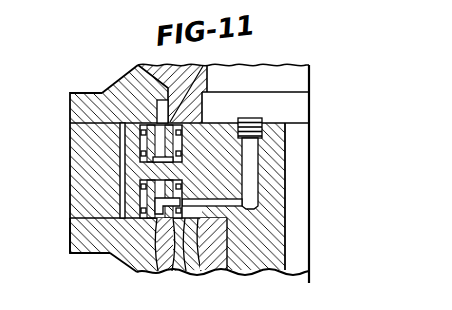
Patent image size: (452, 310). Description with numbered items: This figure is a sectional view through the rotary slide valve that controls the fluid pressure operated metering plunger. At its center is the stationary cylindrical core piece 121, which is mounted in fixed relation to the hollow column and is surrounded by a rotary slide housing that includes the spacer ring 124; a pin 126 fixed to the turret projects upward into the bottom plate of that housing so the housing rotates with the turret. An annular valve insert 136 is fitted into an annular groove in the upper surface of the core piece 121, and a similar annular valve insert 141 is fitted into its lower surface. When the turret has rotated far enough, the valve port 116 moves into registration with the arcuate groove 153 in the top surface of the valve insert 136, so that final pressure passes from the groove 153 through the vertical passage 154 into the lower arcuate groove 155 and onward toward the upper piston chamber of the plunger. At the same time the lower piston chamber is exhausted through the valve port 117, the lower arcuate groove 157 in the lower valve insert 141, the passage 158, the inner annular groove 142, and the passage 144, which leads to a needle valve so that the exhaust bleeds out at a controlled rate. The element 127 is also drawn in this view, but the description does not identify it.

The valve port 116 is at (139, 64).
The spacer ring 124 is at (204, 68).
The annular valve insert 136 is at (219, 65).
The passage 144 is at (261, 150).
The core piece 121 is at (280, 219).
The arcuate groove 153 is at (157, 123).
The vertical passage 154 is at (153, 149).
The lower arcuate groove 155 is at (153, 165).
The pin 126 is at (72, 190).
The annular valve insert 141 is at (163, 188).
The base block 127 is at (82, 250).
The valve port 117 is at (137, 273).
The lower arcuate groove 157 is at (156, 276).
The passage 158 is at (170, 273).
The inner annular groove 142 is at (205, 270).